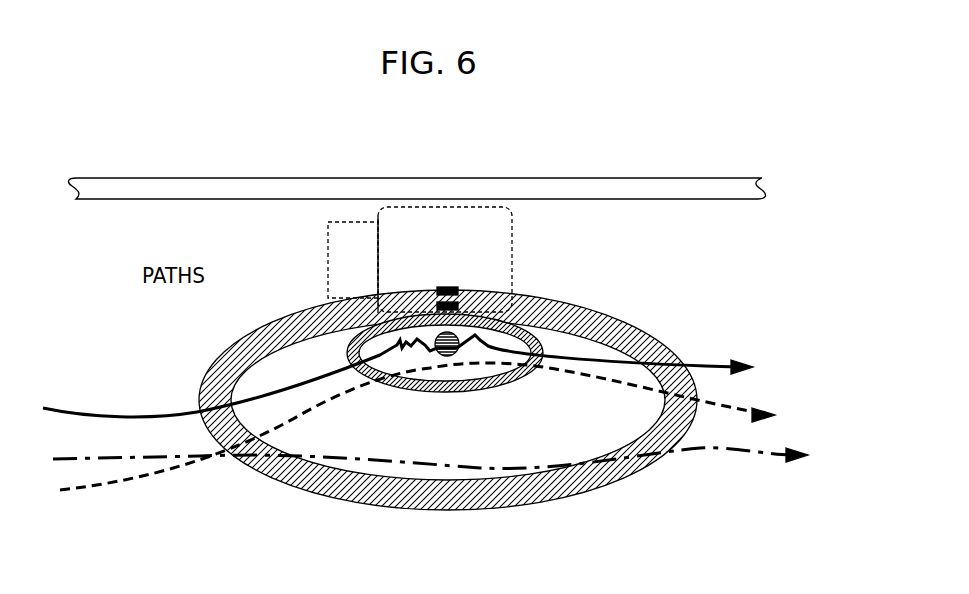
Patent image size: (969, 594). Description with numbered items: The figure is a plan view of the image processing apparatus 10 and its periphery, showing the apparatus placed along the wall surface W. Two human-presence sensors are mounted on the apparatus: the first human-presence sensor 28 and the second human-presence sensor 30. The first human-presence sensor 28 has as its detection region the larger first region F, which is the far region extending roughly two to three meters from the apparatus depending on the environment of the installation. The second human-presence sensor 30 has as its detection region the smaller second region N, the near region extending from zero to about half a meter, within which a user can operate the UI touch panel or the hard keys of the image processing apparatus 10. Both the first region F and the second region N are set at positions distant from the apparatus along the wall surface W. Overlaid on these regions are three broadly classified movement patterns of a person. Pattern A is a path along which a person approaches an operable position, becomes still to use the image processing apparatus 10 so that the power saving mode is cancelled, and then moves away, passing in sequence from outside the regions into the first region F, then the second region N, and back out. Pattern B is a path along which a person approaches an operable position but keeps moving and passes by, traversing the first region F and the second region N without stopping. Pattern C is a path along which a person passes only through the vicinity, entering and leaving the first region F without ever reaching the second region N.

The image processing apparatus 10 is at (514, 230).
The first human-presence sensor 28 is at (437, 290).
The second human-presence sensor 30 is at (458, 305).
The wall surface W is at (650, 201).
The second region N is at (573, 308).
The first region F is at (613, 314).
The pattern A is at (705, 366).
The pattern B is at (725, 403).
The pattern C is at (717, 447).